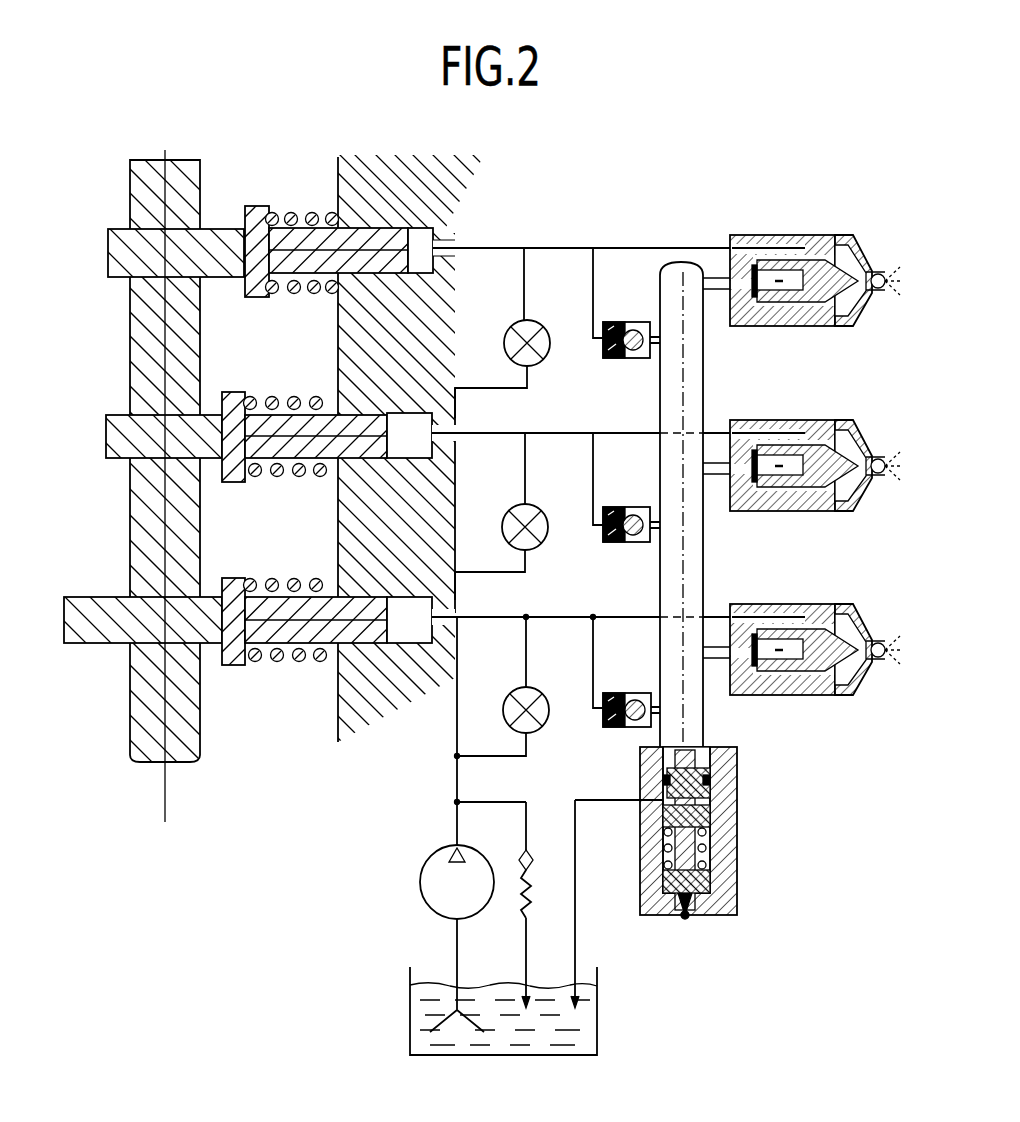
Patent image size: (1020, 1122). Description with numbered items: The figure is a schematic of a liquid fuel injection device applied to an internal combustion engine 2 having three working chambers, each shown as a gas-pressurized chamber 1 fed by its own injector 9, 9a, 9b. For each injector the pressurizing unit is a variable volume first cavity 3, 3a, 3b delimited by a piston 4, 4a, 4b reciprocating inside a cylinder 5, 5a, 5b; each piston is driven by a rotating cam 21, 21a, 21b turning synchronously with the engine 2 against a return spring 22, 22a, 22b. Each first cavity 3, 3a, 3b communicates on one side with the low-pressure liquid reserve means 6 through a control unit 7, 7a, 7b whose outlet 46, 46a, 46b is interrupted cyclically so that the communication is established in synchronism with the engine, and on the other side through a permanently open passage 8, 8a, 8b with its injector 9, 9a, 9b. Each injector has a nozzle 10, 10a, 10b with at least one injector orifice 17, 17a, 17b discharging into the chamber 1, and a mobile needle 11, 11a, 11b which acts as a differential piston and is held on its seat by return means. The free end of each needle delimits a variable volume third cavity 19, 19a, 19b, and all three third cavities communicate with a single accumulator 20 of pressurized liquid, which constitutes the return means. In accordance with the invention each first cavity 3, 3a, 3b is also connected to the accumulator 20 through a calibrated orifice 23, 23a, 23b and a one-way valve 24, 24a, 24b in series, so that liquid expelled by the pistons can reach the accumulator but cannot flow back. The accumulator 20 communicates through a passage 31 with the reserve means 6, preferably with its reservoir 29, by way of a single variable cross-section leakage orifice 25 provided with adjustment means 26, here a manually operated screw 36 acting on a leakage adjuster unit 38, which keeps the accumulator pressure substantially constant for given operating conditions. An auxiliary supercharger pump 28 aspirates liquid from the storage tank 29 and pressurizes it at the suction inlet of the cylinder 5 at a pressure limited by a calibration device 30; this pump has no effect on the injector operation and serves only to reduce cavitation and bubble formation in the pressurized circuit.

The working chamber 1 is at (894, 463).
The internal combustion engine 2 is at (319, 907).
The first cavity 3 is at (421, 620).
The first cavity 3a is at (421, 435).
The first cavity 3b is at (431, 250).
The piston 4 is at (447, 447).
The spring plate 4a is at (361, 361).
The spring plate 4b is at (281, 281).
The cylinder 5 is at (508, 508).
The piston rod 5a is at (419, 419).
The piston rod 5b is at (336, 336).
The low-pressure liquid reserve means 6 is at (344, 997).
The control unit 7 is at (541, 764).
The control unit 7a is at (560, 578).
The control unit 7b is at (563, 385).
The passage 8 is at (582, 646).
The pressure line 8a is at (582, 465).
The pressure line 8b is at (582, 214).
The injector 9 is at (737, 599).
The injector 9a is at (734, 422).
The injector 9b is at (737, 228).
The nozzle 10 is at (783, 680).
The nozzle body 10a is at (794, 488).
The nozzle body 10b is at (782, 309).
The needle 11 is at (860, 627).
The nozzle cap 11a is at (860, 440).
The nozzle cap 11b is at (854, 246).
The injector orifice 17 is at (870, 699).
The nozzle orifice 17a is at (884, 507).
The nozzle orifice 17b is at (865, 328).
The third cavity 19 is at (805, 613).
The third cavity 19a is at (805, 428).
The third cavity 19b is at (805, 234).
The accumulator 20 is at (717, 507).
The rotating cam 21 is at (368, 561).
The drive lever 21a is at (455, 561).
The drive lever 21b is at (510, 561).
The return spring 22 is at (285, 593).
The return spring 22a is at (285, 407).
The return spring 22b is at (302, 216).
The calibrated orifice 23 is at (608, 764).
The calibrated orifice 23a is at (639, 577).
The calibrated orifice 23b is at (640, 384).
The one-way valve 24 is at (626, 672).
The one-way valve 24a is at (626, 487).
The one-way valve 24b is at (626, 303).
The leakage orifice 25 is at (723, 830).
The adjustment means 26 is at (697, 831).
The supercharger pump 28 is at (433, 824).
The storage tank 29 is at (542, 1011).
The calibration device 30 is at (542, 905).
The passage 31 is at (602, 904).
The screw 36 is at (702, 943).
The leakage adjuster unit 38 is at (722, 770).
The outlet 46 is at (502, 688).
The outlet 46a is at (501, 516).
The outlet 46b is at (520, 333).